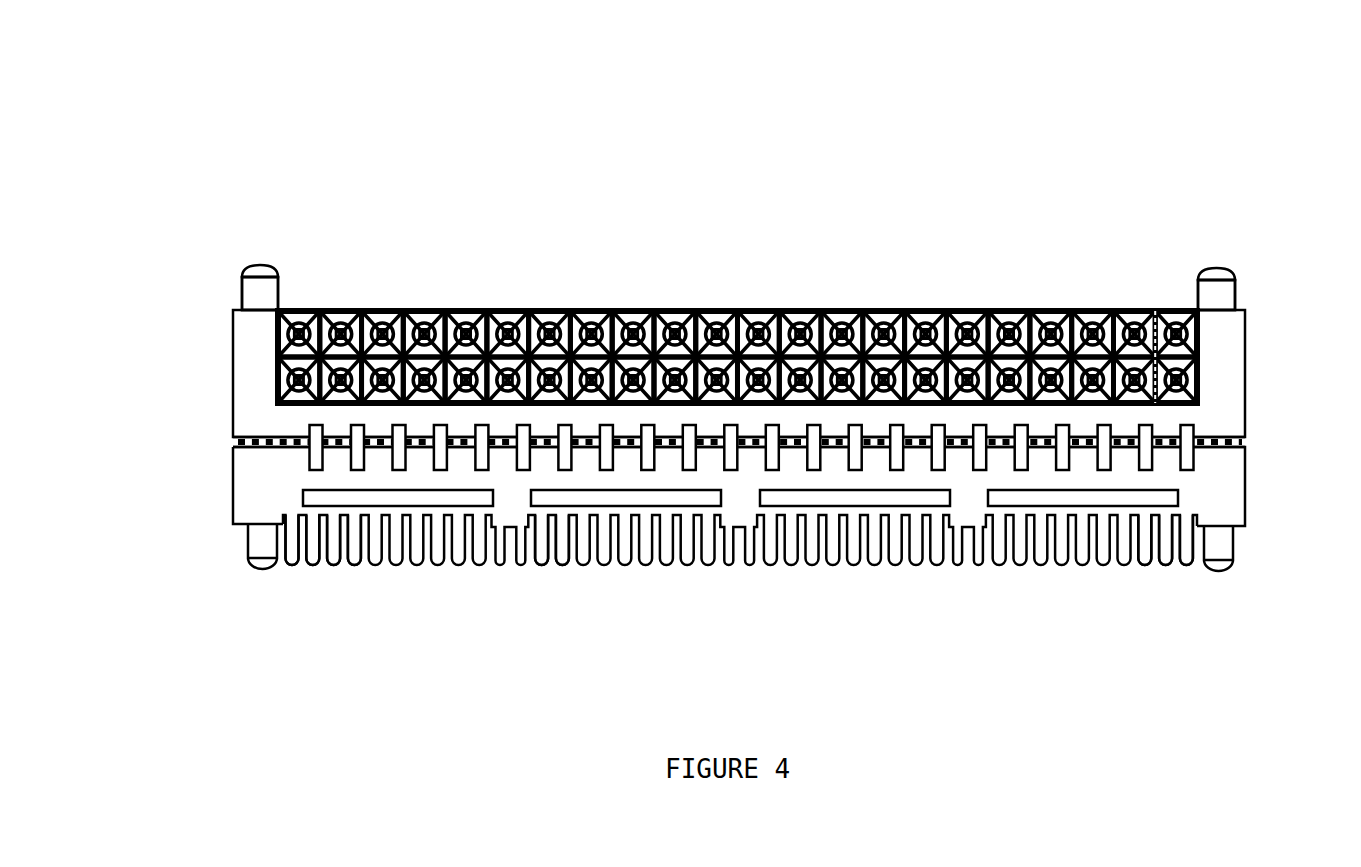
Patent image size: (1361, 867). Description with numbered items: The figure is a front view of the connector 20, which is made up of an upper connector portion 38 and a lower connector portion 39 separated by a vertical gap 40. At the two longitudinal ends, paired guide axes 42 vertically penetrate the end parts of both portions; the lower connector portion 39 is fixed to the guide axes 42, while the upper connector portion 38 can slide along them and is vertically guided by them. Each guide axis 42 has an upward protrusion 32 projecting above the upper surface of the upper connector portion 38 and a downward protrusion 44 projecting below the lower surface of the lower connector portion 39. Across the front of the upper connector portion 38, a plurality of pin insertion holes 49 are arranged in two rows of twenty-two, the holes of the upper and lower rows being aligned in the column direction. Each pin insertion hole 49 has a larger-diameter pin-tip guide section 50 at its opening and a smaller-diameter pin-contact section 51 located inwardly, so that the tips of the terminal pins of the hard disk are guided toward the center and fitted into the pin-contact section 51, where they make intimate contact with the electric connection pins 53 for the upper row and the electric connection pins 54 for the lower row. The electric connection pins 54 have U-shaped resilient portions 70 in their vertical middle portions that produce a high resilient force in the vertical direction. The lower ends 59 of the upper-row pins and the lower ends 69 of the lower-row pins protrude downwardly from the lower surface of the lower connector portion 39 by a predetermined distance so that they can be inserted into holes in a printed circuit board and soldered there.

The connector 20 is at (757, 137).
The upward protrusion 32 is at (280, 288).
The upper connector portion 38 is at (231, 373).
The lower connector portion 39 is at (231, 485).
The vertical gap 40 is at (1244, 443).
The guide axes 42 is at (240, 290).
The downward protrusion 44 is at (246, 540).
The pin insertion holes 49 is at (840, 310).
The pin-tip guide section 50 is at (420, 310).
The pin-contact section 51 is at (475, 310).
The electric connection pins for upper row 53 is at (545, 570).
The electric connection pins for lower row 54 is at (566, 570).
The lower ends 59 is at (292, 568).
The lower ends 69 is at (313, 568).
The U-shaped resilient portion 70 is at (316, 425).